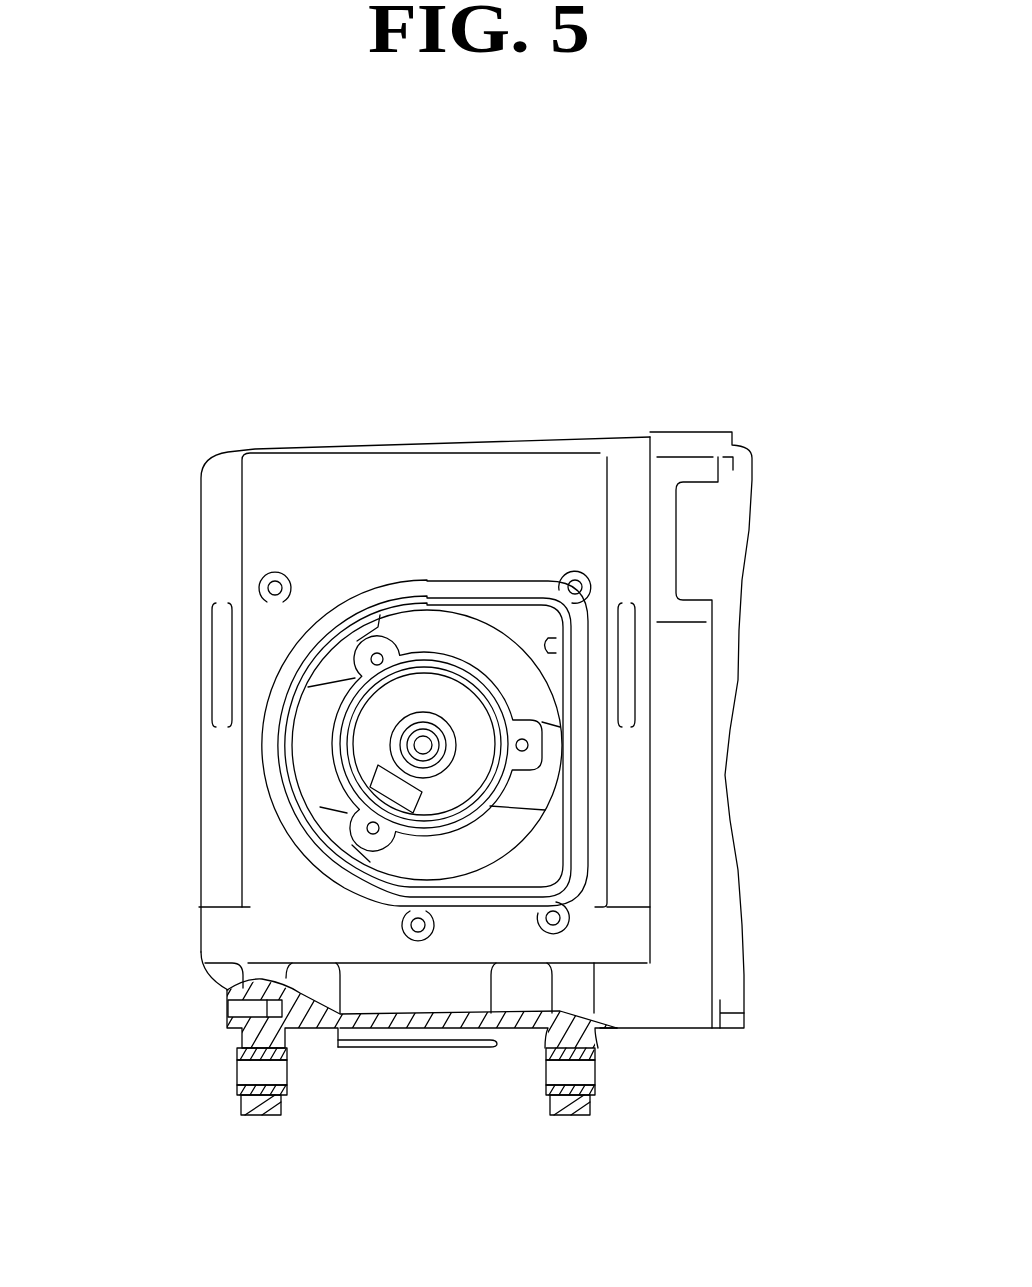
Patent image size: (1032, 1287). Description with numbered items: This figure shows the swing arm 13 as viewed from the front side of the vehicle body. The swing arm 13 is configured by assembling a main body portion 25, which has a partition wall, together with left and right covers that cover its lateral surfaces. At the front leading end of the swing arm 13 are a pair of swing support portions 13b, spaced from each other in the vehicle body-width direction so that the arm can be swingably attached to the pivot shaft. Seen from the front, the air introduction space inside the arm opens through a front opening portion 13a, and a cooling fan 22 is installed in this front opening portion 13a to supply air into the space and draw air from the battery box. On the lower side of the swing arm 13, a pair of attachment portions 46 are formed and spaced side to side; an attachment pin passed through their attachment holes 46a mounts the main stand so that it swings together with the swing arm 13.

The swing arm 13 is at (512, 437).
The front opening portion 13a is at (545, 650).
The swing support portions 13b is at (223, 665).
The cooling fan 22 is at (445, 790).
The main body portion 25 is at (350, 517).
The attachment portions 46 is at (258, 1115).
The attachment holes 46a is at (240, 1072).